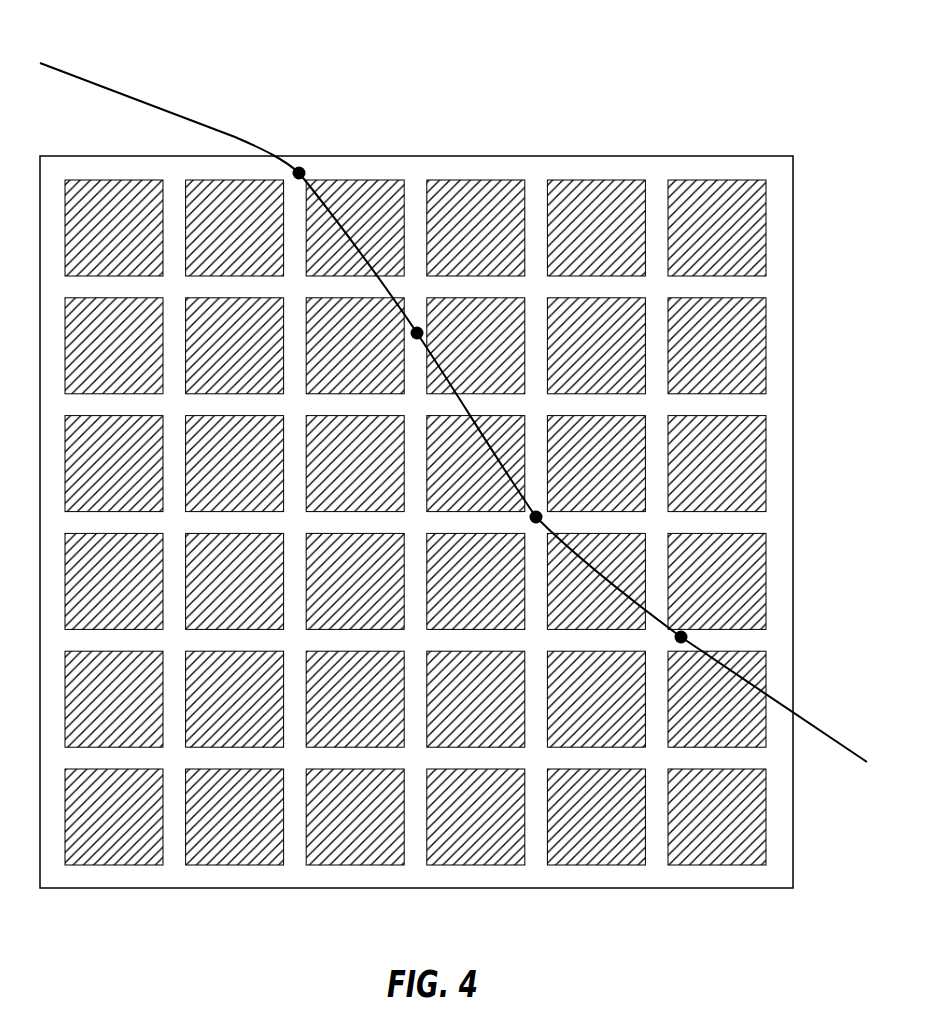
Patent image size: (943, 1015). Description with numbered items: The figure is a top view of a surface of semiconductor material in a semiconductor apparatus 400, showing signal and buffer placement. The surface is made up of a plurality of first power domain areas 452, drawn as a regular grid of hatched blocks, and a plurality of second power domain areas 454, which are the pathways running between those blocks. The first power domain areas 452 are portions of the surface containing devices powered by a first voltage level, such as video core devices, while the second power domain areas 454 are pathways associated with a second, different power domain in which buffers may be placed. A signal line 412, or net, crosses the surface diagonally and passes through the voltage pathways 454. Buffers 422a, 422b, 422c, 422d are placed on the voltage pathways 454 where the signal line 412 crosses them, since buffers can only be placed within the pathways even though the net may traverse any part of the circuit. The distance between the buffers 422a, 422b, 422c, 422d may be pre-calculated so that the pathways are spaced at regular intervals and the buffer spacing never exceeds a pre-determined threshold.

The semiconductor apparatus 400 is at (759, 65).
The signal line 412 is at (245, 140).
The buffer 422a is at (306, 173).
The buffer 422b is at (424, 332).
The buffer 422c is at (544, 517).
The buffer 422d is at (688, 637).
The first power domain areas 452 is at (560, 183).
The second power domain areas 454 is at (657, 163).